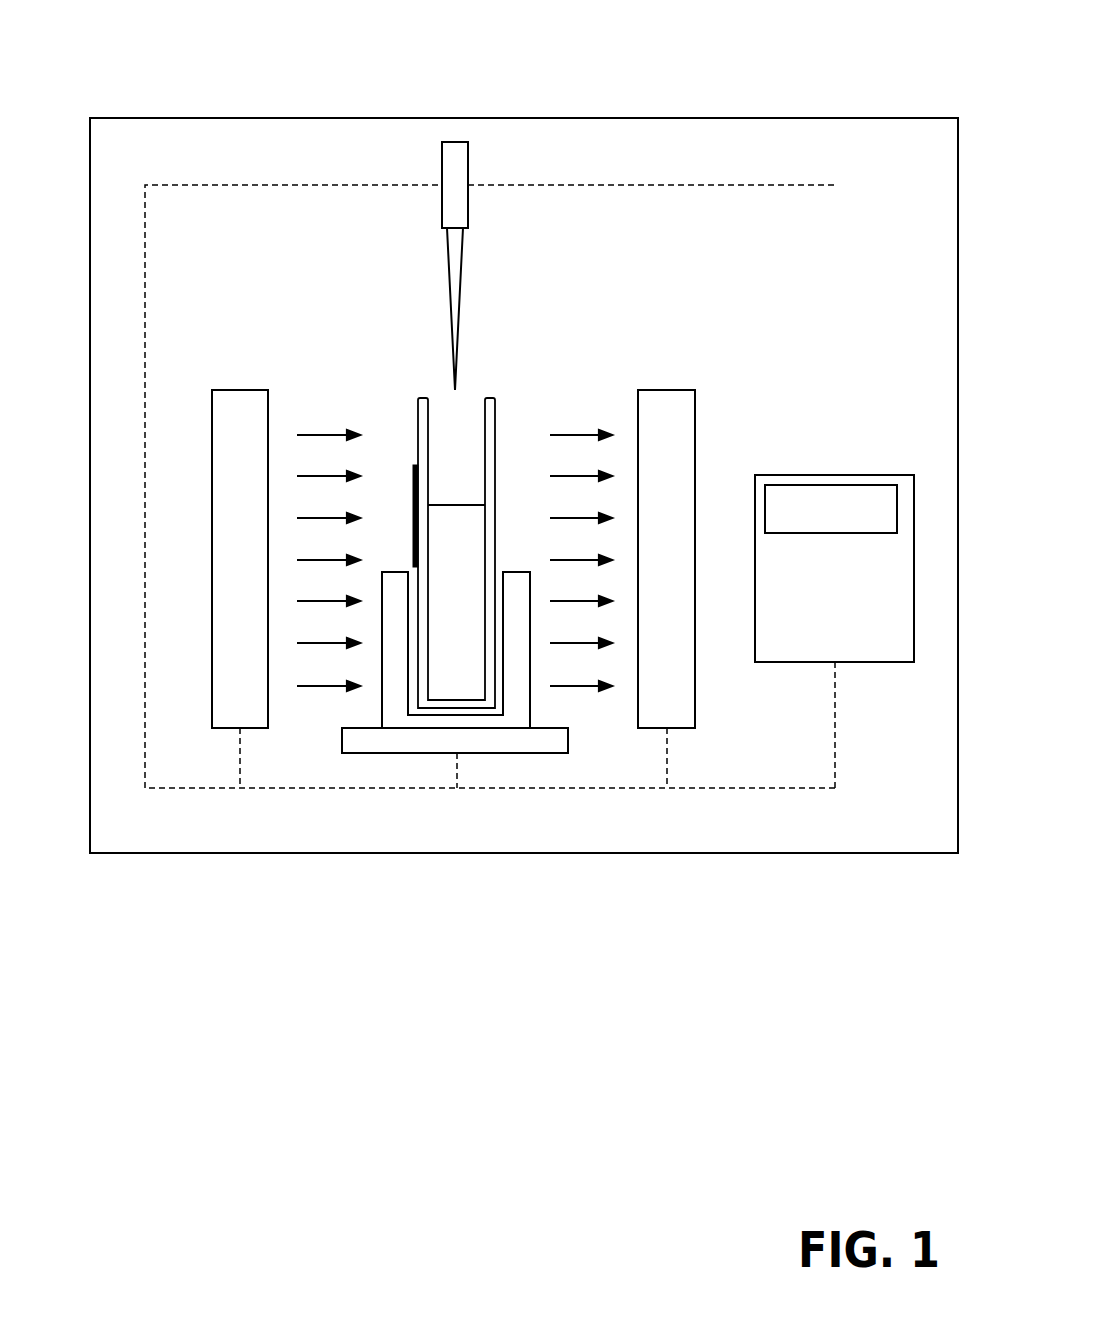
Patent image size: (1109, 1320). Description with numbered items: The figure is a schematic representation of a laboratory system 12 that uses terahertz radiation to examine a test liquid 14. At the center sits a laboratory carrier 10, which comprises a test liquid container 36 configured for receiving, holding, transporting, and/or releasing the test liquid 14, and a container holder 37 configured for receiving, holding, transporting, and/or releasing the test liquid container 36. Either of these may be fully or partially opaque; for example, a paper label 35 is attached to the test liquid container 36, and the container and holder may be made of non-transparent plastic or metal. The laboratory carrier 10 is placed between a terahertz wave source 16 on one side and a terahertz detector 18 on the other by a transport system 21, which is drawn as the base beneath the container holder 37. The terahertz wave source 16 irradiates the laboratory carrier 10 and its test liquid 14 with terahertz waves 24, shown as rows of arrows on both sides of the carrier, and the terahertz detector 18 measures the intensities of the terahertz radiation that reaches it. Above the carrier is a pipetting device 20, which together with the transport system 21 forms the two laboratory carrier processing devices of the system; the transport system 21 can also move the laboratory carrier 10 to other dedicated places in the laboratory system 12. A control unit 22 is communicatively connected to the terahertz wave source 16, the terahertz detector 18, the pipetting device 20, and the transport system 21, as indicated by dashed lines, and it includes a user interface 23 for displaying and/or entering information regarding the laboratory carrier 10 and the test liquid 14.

The laboratory carrier 10 is at (553, 310).
The laboratory system 12 is at (763, 117).
The test liquid 14 is at (462, 660).
The terahertz wave source 16 is at (240, 403).
The terahertz detector 18 is at (652, 403).
The pipetting device 20 is at (457, 208).
The transport system 21 is at (394, 740).
The control unit 22 is at (906, 485).
The user interface 23 is at (812, 492).
The terahertz waves 24 is at (362, 387).
The paper label 35 is at (416, 490).
The test liquid container 36 is at (489, 418).
The container holder 37 is at (516, 578).